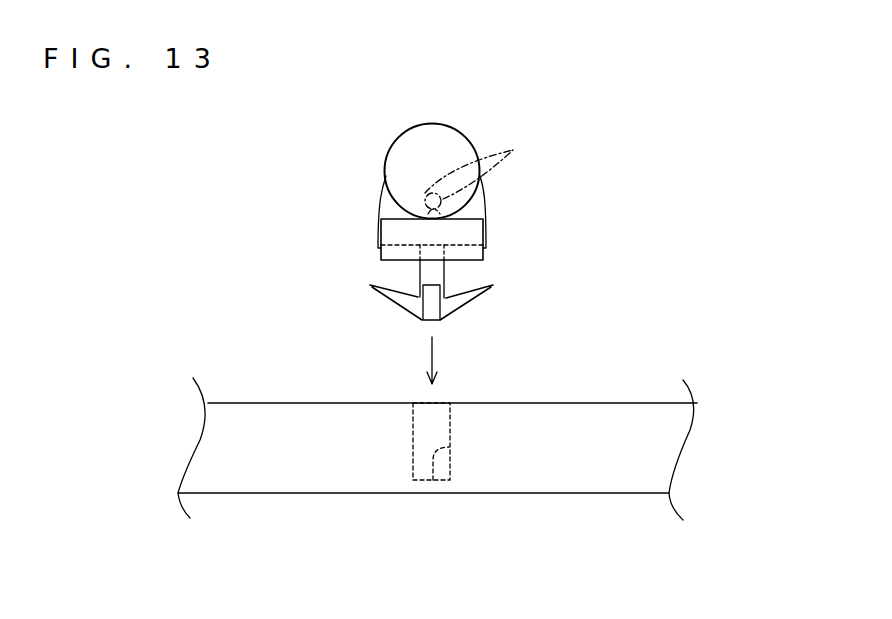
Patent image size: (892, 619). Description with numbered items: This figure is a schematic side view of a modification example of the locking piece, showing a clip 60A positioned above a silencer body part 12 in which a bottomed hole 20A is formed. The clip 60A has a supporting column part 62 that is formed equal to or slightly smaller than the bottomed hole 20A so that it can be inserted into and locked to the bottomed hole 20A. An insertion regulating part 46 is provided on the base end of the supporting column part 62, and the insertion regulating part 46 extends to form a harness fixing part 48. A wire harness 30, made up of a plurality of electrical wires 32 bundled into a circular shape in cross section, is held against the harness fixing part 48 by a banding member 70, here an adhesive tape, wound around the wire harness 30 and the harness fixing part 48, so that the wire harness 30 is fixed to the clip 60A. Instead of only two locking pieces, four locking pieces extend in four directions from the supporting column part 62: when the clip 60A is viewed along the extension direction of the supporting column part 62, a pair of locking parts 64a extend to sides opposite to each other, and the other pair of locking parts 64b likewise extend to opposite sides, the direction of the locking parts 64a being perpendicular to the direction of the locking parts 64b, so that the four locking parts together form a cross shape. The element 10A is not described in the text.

The vehicle body panel 10A is at (437, 476).
The silencer body part 12 is at (605, 478).
The bottomed hole 20A is at (433, 480).
The wire harness 30 is at (475, 205).
The electrical wires 32 is at (506, 149).
The insertion regulating part 46 is at (482, 239).
The harness fixing part 48 is at (472, 235).
The clip 60A is at (436, 309).
The supporting column part 62 is at (433, 273).
The locking parts 64a is at (435, 309).
The locking parts 64b is at (402, 298).
The banding member 70 is at (378, 217).